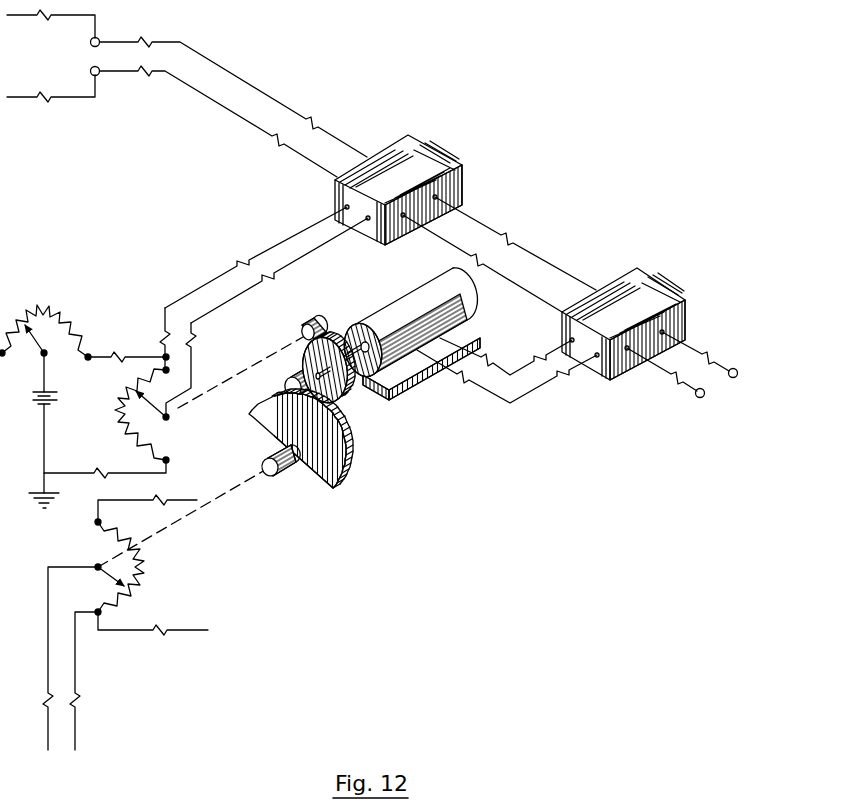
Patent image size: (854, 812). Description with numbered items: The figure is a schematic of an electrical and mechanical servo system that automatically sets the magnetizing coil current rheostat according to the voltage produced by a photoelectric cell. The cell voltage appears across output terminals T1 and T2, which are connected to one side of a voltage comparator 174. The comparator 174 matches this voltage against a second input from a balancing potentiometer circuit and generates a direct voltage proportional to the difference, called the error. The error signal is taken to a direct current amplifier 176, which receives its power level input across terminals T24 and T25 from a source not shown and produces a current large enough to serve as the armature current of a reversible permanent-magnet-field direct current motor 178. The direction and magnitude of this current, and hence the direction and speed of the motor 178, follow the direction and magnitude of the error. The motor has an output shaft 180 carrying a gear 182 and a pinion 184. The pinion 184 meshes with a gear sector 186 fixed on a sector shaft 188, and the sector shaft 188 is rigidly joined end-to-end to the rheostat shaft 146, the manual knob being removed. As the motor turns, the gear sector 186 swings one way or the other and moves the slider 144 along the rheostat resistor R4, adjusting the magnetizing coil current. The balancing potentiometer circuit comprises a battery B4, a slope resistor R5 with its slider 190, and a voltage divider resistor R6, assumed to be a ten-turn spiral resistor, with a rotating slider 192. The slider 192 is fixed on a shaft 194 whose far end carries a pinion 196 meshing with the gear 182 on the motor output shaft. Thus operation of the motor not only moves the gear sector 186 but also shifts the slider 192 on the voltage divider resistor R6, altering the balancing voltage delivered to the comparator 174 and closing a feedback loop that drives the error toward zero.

The voltage comparator 174 is at (440, 134).
The direct current amplifier 176 is at (651, 281).
The direct current motor 178 is at (466, 302).
The output shaft 180 is at (370, 344).
The gear 182 is at (348, 397).
The pinion 184 is at (295, 378).
The gear sector 186 is at (347, 482).
The sector shaft 188 is at (283, 477).
The slider 190 is at (32, 347).
The slider 192 is at (146, 415).
The shaft 194 is at (262, 362).
The pinion 196 is at (303, 325).
The slider 144 is at (109, 577).
The rheostat shaft 146 is at (220, 500).
The rheostat resistor R4 is at (146, 580).
The slope resistor R5 is at (68, 307).
The voltage divider resistor R6 is at (121, 394).
The battery B4 is at (34, 403).
The output terminal T1 is at (90, 40).
The output terminal T2 is at (90, 70).
The terminal T24 is at (733, 369).
The terminal T25 is at (698, 400).